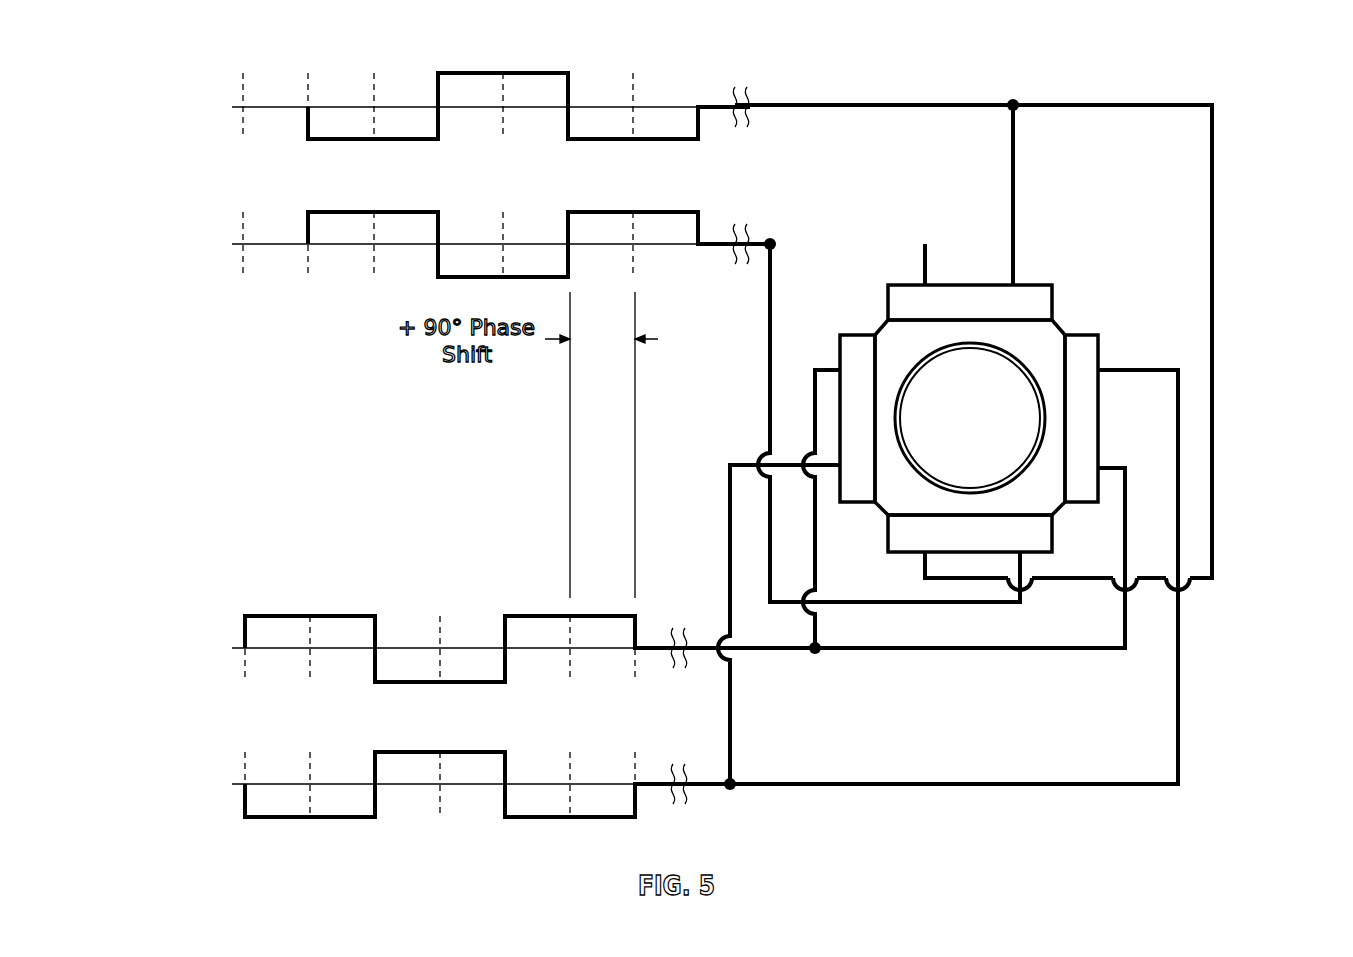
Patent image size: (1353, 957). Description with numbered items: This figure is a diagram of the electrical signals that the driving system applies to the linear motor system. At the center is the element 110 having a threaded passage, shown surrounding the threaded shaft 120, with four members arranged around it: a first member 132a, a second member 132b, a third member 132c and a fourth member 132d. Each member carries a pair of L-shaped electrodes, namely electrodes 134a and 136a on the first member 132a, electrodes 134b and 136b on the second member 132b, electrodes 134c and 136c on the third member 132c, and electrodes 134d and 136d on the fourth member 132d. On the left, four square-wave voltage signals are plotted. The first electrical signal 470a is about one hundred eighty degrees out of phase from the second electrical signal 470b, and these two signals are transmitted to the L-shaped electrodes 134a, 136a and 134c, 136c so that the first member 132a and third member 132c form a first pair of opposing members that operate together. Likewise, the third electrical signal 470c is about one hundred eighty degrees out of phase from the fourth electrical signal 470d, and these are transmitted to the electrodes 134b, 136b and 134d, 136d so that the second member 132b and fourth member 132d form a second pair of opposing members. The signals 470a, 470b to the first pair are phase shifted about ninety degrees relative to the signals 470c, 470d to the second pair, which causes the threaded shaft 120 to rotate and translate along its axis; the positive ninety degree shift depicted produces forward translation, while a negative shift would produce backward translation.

The element with a threaded passage 110 is at (1052, 392).
The threaded shaft 120 is at (990, 442).
The first member 132a is at (1053, 298).
The second member 132b is at (1083, 358).
The third member 132c is at (1018, 532).
The fourth member 132d is at (857, 350).
The L-shaped electrode 134a is at (1032, 285).
The L-shaped electrode 134b is at (1102, 483).
The L-shaped electrode 134c is at (1037, 552).
The L-shaped electrode 134d is at (840, 447).
The L-shaped electrode 136a is at (945, 285).
The L-shaped electrode 136b is at (1102, 340).
The L-shaped electrode 136c is at (908, 552).
The L-shaped electrode 136d is at (840, 345).
The first electrical signal 470a is at (478, 73).
The second electrical signal 470b is at (618, 212).
The third electrical signal 470c is at (278, 615).
The fourth electrical signal 470d is at (280, 818).